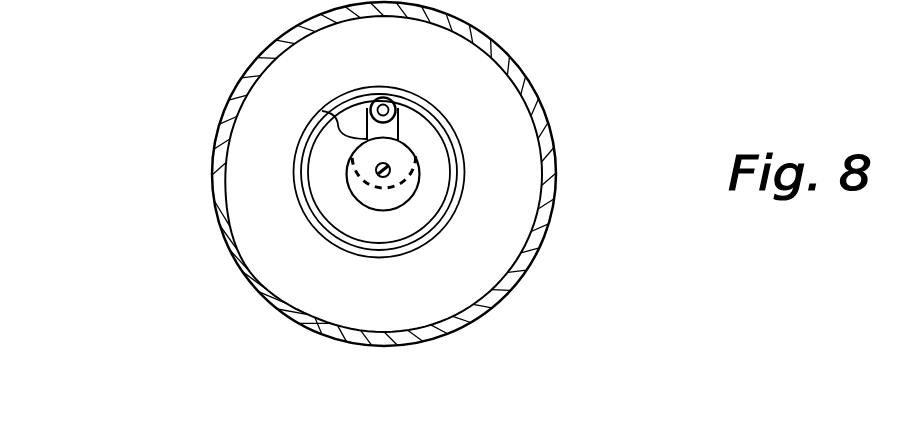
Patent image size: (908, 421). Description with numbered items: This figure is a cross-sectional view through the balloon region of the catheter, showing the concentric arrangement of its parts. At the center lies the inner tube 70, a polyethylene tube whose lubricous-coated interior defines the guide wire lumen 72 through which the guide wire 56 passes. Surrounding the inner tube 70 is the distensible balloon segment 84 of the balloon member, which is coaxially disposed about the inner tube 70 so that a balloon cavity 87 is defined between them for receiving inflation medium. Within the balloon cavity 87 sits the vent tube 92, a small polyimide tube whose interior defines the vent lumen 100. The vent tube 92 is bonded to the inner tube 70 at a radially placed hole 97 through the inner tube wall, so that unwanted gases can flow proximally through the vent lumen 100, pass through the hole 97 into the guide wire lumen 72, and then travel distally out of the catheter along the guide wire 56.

The guide wire 56 is at (390, 170).
The inner tube 70 is at (408, 146).
The guide wire lumen 72 is at (373, 185).
The distensible balloon segment 84 is at (538, 92).
The balloon cavity 87 is at (518, 203).
The vent tube 92 is at (400, 136).
The radially placed hole 97 is at (322, 111).
The vent lumen 100 is at (391, 98).